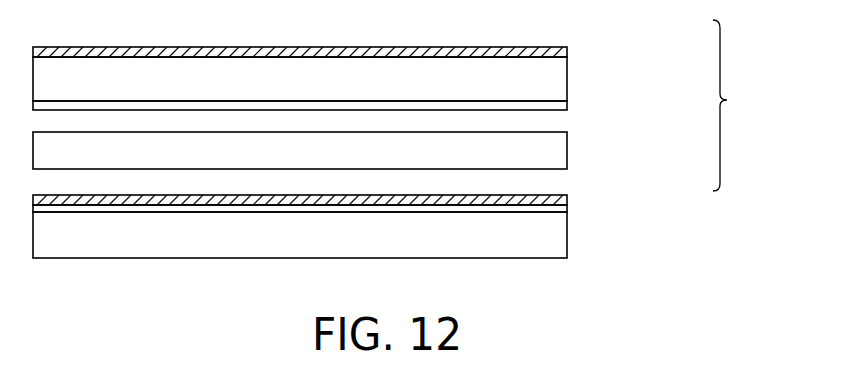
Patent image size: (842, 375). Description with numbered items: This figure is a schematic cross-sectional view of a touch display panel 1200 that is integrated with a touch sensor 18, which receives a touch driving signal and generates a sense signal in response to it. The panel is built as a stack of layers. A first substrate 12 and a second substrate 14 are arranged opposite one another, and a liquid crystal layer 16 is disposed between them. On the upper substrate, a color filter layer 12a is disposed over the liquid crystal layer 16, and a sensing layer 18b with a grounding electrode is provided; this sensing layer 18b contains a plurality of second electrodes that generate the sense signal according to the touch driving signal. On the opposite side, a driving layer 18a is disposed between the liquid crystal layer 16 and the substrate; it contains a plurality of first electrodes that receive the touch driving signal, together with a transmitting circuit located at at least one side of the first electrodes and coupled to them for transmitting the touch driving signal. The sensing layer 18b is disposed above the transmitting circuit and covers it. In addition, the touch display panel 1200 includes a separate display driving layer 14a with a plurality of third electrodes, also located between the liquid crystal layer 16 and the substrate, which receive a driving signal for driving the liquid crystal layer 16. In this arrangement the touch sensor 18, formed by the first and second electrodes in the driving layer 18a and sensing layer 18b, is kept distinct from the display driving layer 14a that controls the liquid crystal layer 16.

The first substrate 12 is at (568, 82).
The color filter layer 12a is at (568, 106).
The second substrate 14 is at (568, 242).
The display driving layer 14a is at (568, 208).
The liquid crystal layer 16 is at (568, 151).
The touch sensor 18 is at (732, 105).
The driving layer 18a is at (568, 199).
The sensing layer 18b is at (568, 53).
The touch display panel 1200 is at (400, 163).